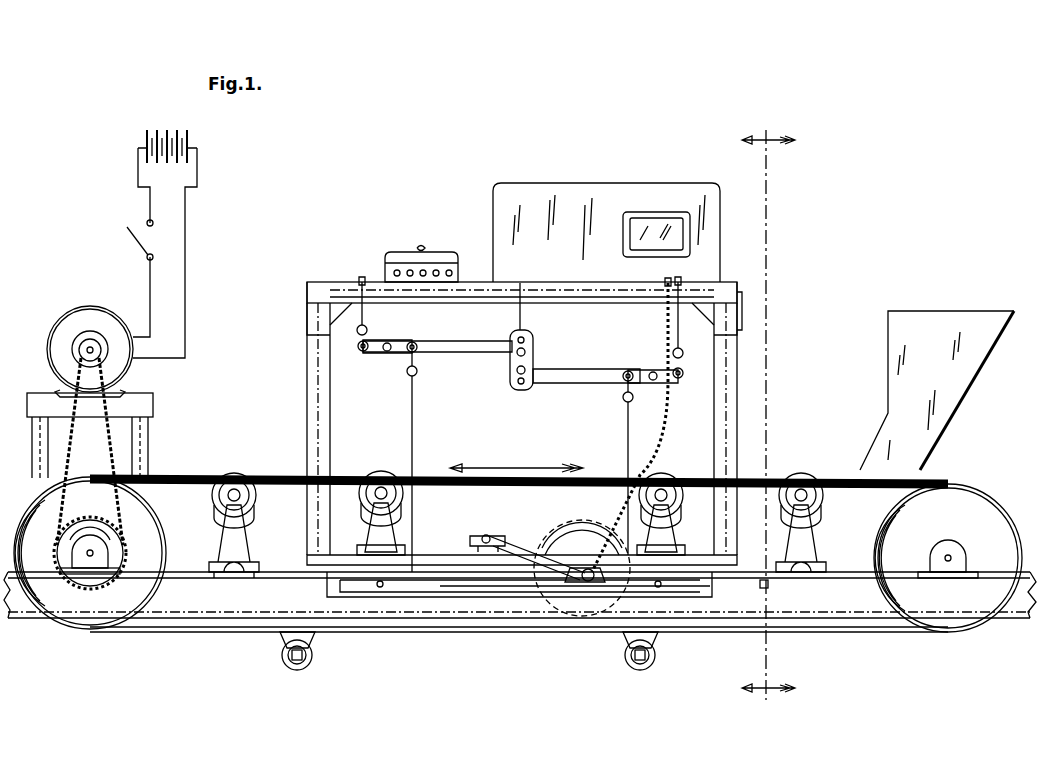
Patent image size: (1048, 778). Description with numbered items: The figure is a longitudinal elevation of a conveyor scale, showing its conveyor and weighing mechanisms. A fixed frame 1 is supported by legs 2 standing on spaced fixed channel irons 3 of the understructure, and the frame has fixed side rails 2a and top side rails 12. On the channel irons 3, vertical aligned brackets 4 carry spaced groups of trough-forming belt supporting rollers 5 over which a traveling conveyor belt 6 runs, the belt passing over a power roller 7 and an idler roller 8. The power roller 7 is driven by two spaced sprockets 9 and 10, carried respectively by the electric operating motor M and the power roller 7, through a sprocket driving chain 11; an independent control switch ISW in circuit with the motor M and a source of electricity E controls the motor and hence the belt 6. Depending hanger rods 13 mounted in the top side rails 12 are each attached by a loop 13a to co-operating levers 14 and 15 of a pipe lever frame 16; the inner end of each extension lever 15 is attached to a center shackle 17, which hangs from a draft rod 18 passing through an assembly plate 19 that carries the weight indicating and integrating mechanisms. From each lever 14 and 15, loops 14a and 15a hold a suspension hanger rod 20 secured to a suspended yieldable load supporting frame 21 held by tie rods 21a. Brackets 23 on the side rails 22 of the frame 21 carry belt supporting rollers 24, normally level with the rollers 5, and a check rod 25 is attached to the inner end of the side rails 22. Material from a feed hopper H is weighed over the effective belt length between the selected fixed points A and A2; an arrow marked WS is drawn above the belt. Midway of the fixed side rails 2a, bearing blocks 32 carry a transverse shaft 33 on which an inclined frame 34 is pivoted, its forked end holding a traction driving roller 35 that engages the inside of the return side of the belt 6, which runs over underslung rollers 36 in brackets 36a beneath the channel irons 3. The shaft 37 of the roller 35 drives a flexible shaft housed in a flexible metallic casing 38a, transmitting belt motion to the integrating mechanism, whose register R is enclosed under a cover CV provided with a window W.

The fixed frame 1 is at (746, 295).
The legs 2 is at (305, 372).
The fixed side rails 2a is at (438, 553).
The channel irons 3 is at (215, 600).
The brackets 4 is at (242, 548).
The belt supporting rollers 5 is at (257, 507).
The conveyor belt 6 is at (270, 476).
The power roller 7 is at (145, 545).
The idler roller 8 is at (990, 520).
The sprocket 9 is at (73, 356).
The sprocket 10 is at (105, 522).
The sprocket driving chain 11 is at (112, 440).
The top side rails 12 is at (442, 302).
The hanger rods 13 is at (366, 310).
The loop 13a is at (360, 352).
The lever 14 is at (455, 340).
The loop 14a is at (418, 368).
The extension lever 15 is at (590, 370).
The loop 15a is at (624, 384).
The pipe lever frame 16 is at (383, 354).
The center shackle 17 is at (535, 360).
The draft rod 18 is at (524, 312).
The assembly plate 19 is at (600, 285).
The suspension hanger rod 20 is at (414, 418).
The load supporting frame 21 is at (458, 592).
The tie rods 21a is at (380, 587).
The side rails 22 is at (490, 582).
The brackets 23 is at (378, 540).
The belt supporting rollers 24 is at (362, 499).
The check rod 25 is at (750, 592).
The bearing blocks 32 is at (486, 534).
The transverse shaft 33 is at (491, 542).
The inclined frame 34 is at (512, 548).
The traction driving roller 35 is at (570, 578).
The underslung rollers 36 is at (308, 666).
The brackets 36a is at (285, 636).
The shaft 37 is at (585, 582).
The flexible metallic casing 38a is at (662, 423).
The electric supply source E is at (172, 135).
The independent control switch ISW is at (127, 236).
The electric operating motor M is at (87, 312).
The fixed point A is at (247, 504).
The roller assembly A2 is at (824, 507).
The register R is at (400, 248).
The cover CV is at (585, 183).
The window W is at (675, 228).
The feed hopper H is at (960, 385).
The work direction WS is at (516, 457).